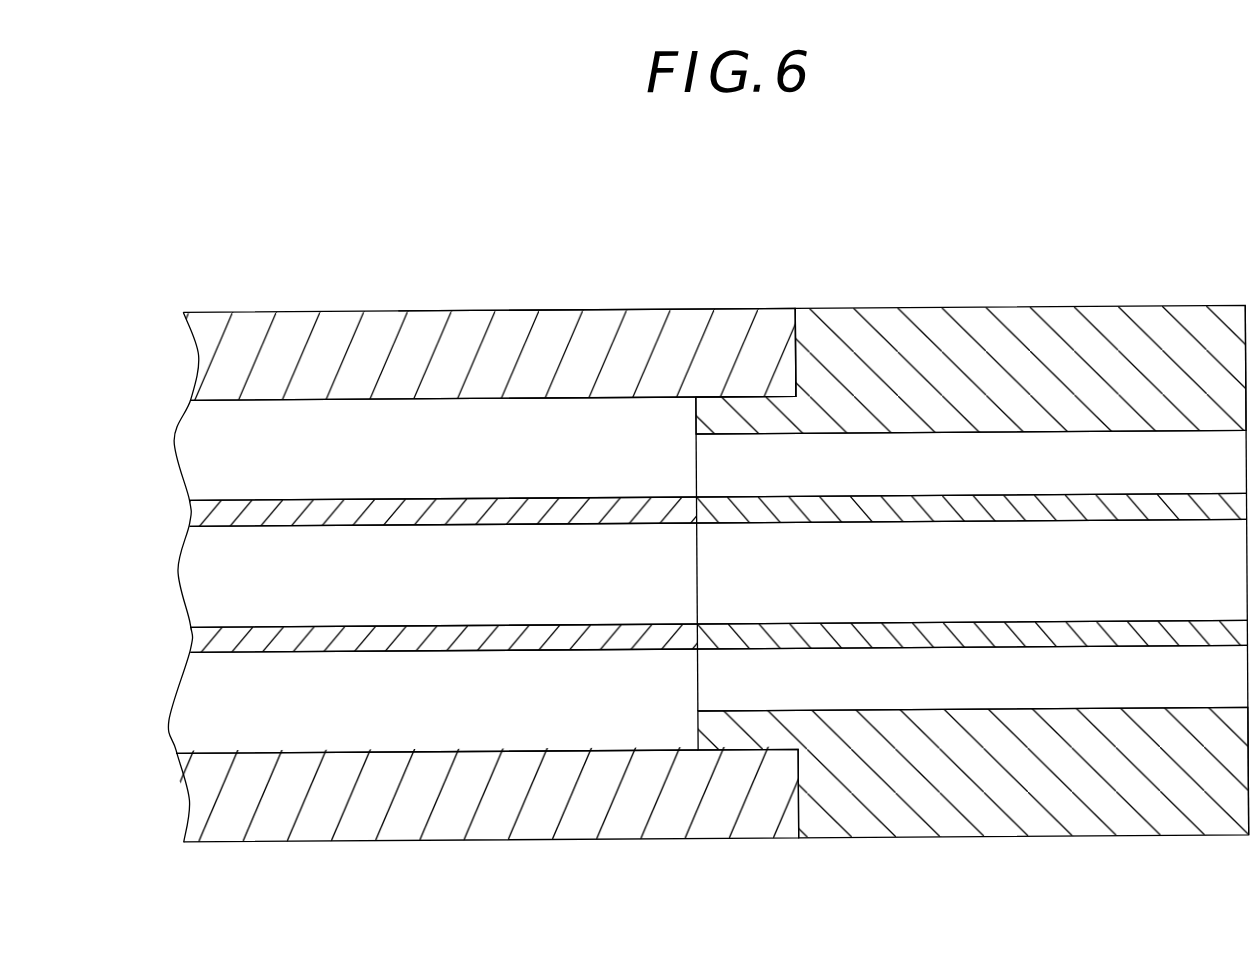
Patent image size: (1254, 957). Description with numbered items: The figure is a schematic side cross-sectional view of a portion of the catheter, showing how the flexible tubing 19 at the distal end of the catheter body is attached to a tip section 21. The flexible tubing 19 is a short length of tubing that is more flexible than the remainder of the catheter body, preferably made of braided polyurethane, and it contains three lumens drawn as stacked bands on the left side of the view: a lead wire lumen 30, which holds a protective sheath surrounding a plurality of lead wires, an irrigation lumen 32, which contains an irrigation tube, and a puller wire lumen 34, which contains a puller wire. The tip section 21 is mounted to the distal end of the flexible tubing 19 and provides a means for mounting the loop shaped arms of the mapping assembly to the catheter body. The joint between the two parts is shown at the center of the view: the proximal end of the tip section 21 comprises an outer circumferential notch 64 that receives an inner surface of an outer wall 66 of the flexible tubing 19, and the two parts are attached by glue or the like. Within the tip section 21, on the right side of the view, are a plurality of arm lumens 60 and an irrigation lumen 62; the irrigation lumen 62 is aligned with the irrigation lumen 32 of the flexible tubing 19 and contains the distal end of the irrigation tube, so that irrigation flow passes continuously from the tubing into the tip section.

The flexible tubing 19 is at (475, 307).
The tip section 21 is at (880, 307).
The lead wire lumen 30 is at (450, 460).
The irrigation lumen 32 is at (450, 591).
The puller wire lumen 34 is at (450, 711).
The arm lumens 60 is at (992, 479).
The irrigation lumen 62 is at (992, 592).
The outer circumferential notch 64 is at (797, 350).
The outer wall 66 is at (625, 307).